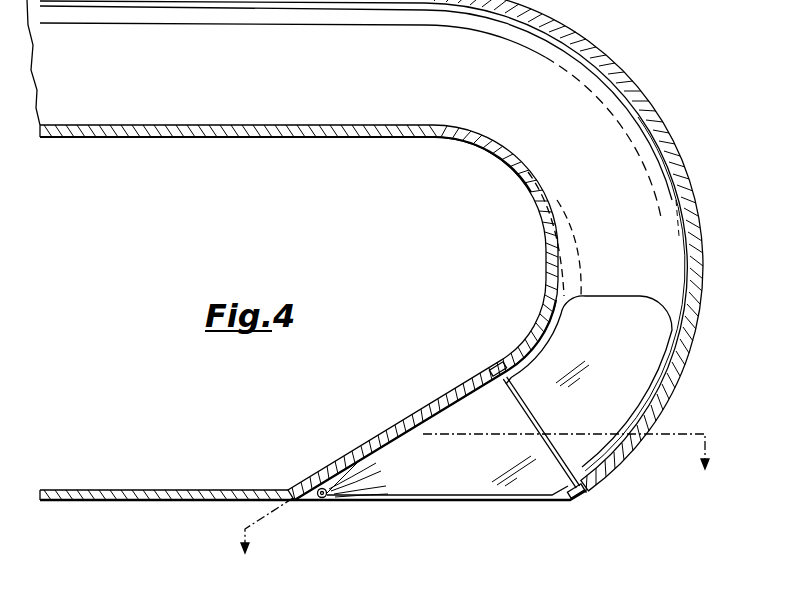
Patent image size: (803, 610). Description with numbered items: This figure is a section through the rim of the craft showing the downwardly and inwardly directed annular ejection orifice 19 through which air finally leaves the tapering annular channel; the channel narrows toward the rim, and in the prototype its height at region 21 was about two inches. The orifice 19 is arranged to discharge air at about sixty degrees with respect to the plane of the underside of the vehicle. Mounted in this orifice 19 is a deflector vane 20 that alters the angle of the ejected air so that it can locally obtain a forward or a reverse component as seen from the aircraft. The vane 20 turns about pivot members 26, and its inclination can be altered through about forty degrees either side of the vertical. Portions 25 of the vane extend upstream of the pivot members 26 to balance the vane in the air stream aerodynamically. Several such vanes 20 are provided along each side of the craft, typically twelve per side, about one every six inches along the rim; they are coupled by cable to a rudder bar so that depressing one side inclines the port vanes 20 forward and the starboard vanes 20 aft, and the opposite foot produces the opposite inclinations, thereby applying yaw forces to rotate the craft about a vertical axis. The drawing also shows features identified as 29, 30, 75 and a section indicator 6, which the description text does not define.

The annular ejection orifice 19 is at (677, 280).
The region 21 is at (273, 78).
The deflector vane 20 is at (461, 487).
The portions 25 is at (631, 306).
The pivot members 26 is at (497, 364).
The hinge pin 29 is at (322, 498).
The resilient strips 30 is at (364, 494).
The seal strip 75 is at (357, 427).
The section line 6- 6 is at (474, 504).